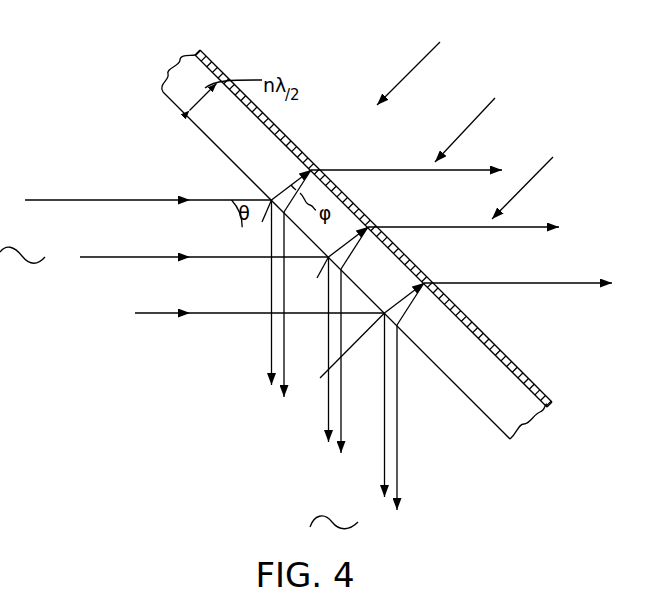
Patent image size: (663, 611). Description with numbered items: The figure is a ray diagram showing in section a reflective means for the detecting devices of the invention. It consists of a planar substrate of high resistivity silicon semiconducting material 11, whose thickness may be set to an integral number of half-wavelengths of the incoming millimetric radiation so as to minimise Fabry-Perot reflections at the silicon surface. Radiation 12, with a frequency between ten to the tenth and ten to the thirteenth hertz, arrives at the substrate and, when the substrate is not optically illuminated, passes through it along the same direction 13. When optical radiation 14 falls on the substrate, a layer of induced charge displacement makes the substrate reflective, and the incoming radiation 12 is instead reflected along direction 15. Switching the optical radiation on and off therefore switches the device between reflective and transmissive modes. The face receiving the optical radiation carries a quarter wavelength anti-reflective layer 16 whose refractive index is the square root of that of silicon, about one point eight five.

The silicon semiconducting material 11 is at (498, 428).
The radiation 12 is at (219, 315).
The transmitted direction 13 is at (570, 286).
The optical radiation 14 is at (418, 62).
The reflected direction 15 is at (398, 445).
The quarter wavelength anti-reflective layer 16 is at (293, 143).